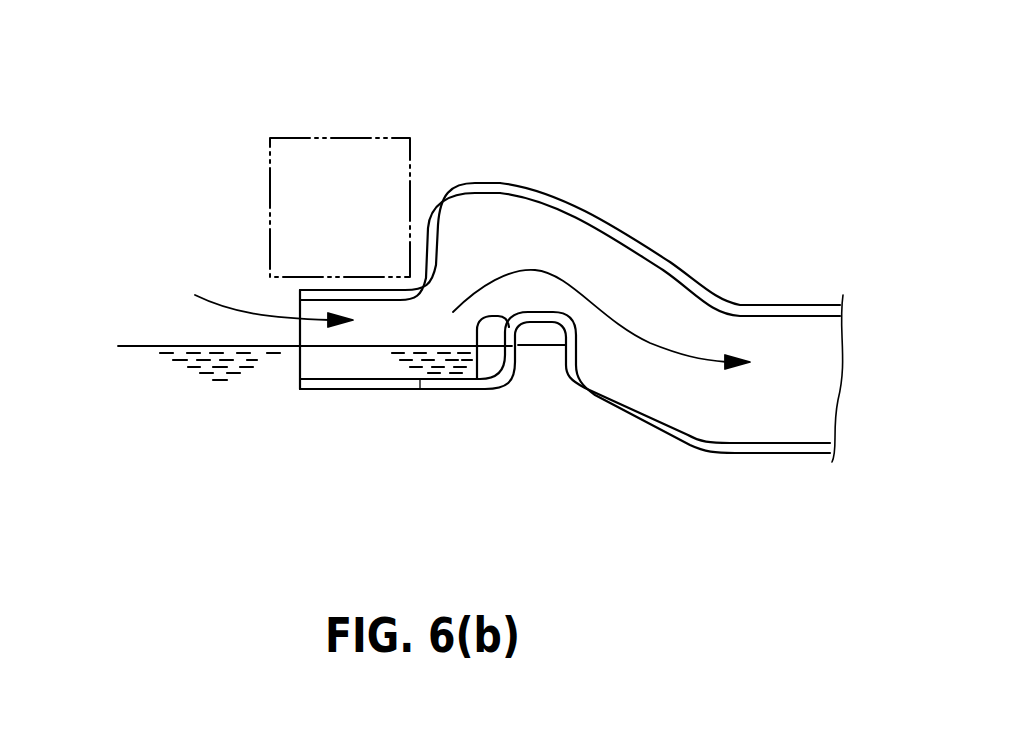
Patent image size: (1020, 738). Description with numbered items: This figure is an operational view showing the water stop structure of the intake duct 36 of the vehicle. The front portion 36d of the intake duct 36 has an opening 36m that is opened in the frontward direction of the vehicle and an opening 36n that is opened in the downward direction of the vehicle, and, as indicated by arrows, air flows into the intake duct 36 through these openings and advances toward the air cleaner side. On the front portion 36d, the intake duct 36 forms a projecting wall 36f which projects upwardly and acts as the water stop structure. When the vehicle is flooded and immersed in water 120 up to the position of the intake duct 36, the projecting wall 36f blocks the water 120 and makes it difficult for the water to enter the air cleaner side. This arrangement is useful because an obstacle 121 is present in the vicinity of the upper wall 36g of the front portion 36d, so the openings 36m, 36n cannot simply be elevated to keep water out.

The intake duct 36 is at (608, 153).
The upper wall 36g is at (497, 183).
The front portion 36d is at (668, 259).
The opening 36m is at (297, 372).
The opening 36n is at (372, 390).
The projecting wall 36f is at (477, 380).
The water 120 is at (145, 360).
The obstacle 121 is at (270, 172).